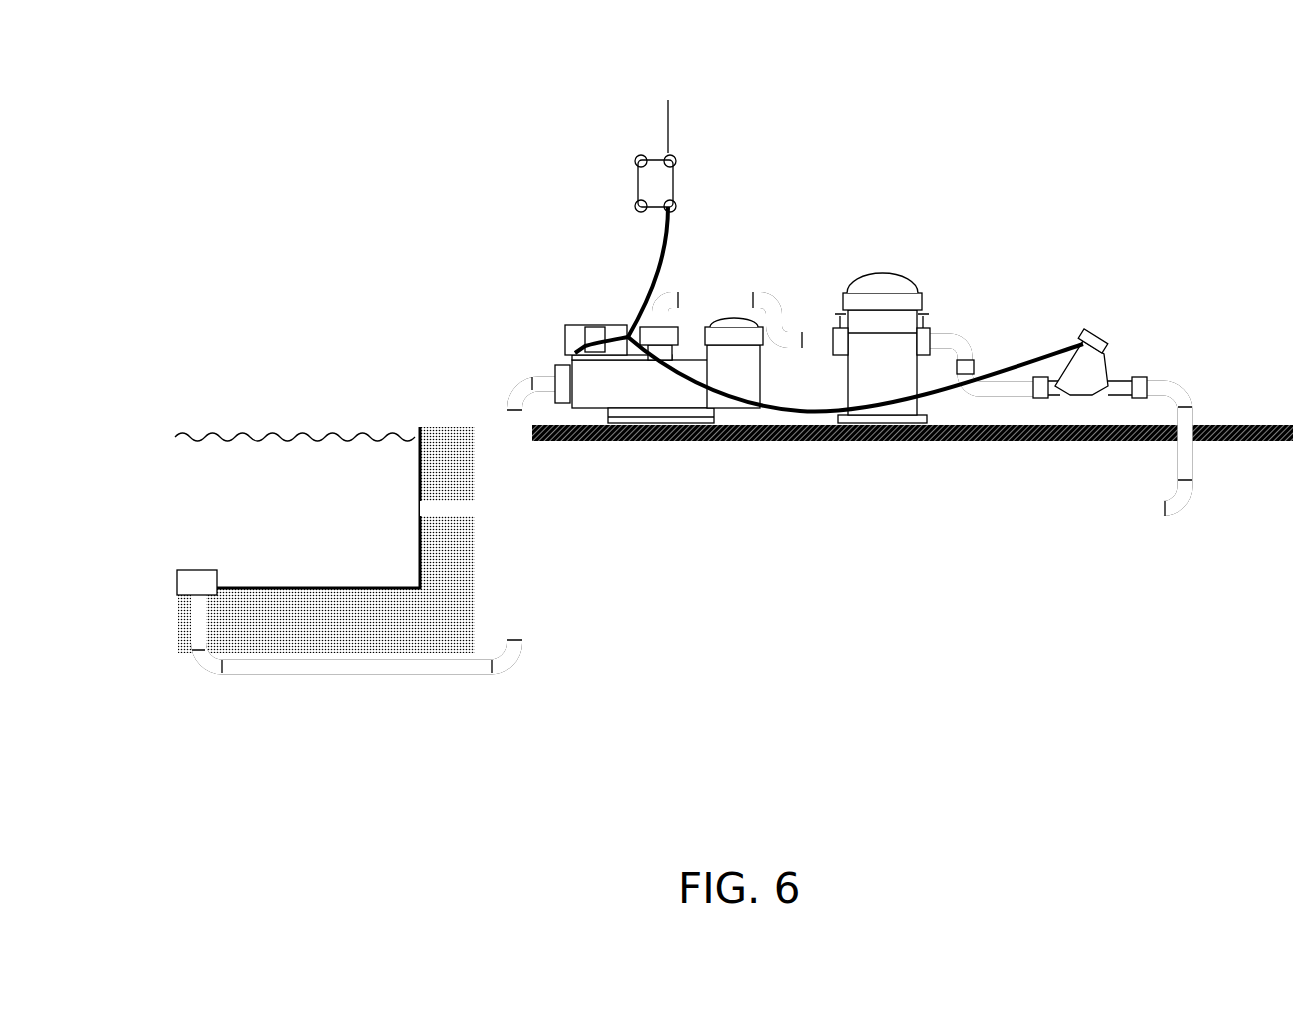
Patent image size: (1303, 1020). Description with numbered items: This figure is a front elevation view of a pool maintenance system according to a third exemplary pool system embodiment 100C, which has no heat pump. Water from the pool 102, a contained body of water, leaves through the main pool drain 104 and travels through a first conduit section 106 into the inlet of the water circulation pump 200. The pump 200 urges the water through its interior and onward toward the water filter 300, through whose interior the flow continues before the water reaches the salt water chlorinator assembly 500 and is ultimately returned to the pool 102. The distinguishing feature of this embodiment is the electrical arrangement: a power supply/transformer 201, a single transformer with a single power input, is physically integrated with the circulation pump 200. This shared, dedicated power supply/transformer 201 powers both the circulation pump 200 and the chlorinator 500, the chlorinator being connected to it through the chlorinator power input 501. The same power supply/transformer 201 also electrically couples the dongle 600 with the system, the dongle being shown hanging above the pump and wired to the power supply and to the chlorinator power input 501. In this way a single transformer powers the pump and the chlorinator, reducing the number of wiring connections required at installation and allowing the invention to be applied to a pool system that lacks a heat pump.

The third exemplary pool system embodiment 100C is at (418, 82).
The pool 102 is at (338, 523).
The main pool drain 104 is at (217, 578).
The conduit section 106 is at (297, 673).
The water circulation pump 200 is at (595, 290).
The power supply/transformer 201 is at (583, 337).
The water filter 300 is at (882, 252).
The salt water chlorinator assembly 500 is at (1103, 309).
The chlorinator power input 501 is at (1097, 345).
The dongle 600 is at (643, 132).